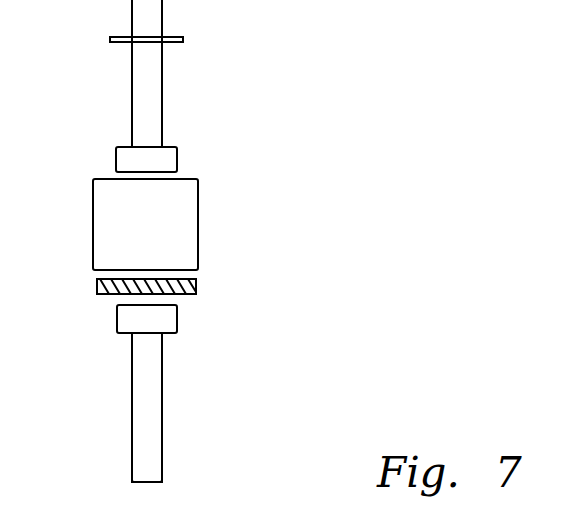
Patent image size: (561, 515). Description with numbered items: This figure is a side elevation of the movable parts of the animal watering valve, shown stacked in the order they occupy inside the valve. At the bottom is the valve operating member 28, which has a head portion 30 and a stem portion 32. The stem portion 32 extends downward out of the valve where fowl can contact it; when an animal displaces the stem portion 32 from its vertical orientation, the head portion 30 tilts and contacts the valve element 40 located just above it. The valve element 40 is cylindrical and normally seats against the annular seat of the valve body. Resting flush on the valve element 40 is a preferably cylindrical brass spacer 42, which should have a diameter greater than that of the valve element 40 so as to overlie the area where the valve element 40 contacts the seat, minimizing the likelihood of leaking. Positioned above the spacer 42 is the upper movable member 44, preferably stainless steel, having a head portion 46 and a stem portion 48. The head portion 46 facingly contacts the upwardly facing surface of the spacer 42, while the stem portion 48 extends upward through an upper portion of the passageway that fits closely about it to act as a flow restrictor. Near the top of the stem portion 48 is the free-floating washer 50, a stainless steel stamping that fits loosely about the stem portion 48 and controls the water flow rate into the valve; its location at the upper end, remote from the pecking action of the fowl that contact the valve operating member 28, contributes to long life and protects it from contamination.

The valve operating member 28 is at (160, 407).
The head portion 30 is at (127, 322).
The stem portion 32 is at (152, 458).
The valve element 40 is at (198, 286).
The spacer 42 is at (188, 222).
The upper movable member 44 is at (125, 78).
The head portion 46 is at (168, 162).
The stem portion 48 is at (155, 88).
The free-floating washer 50 is at (172, 36).